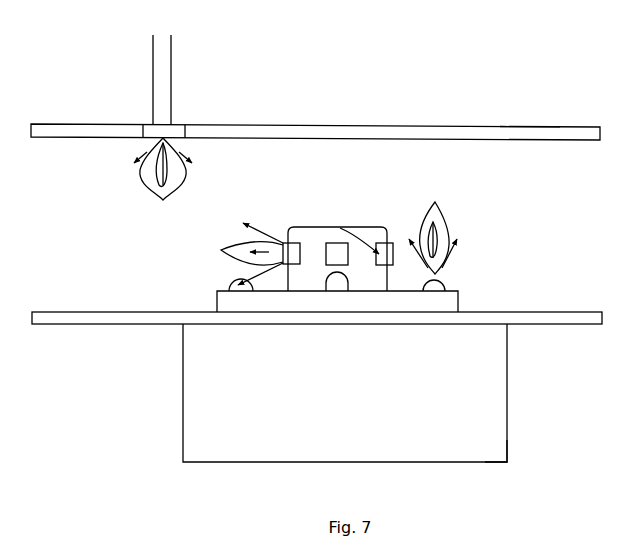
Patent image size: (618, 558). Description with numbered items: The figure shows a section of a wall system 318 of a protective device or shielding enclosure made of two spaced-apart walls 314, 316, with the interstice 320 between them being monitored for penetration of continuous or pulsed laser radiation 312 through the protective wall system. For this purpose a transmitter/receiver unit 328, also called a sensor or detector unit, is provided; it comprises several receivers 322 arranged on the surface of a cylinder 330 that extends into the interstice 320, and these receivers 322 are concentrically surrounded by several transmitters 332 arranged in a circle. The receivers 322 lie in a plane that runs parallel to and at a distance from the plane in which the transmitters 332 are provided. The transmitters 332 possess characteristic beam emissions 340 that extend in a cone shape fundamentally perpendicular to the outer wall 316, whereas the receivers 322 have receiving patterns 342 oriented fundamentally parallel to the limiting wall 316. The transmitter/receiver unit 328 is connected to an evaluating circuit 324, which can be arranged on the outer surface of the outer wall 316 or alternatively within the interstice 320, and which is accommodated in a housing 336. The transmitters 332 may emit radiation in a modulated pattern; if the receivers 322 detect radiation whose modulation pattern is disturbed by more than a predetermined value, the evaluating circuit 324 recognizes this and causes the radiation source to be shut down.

The laser radiation 312 is at (153, 46).
The wall 314 is at (73, 137).
The outer wall 316 is at (72, 324).
The wall system 318 is at (510, 118).
The interstice 320 is at (268, 181).
The receiver 322 is at (340, 227).
The evaluating circuit 324 is at (325, 422).
The transmitter/receiver unit 328 is at (362, 220).
The cylinder 330 is at (388, 270).
The transmitter 332 is at (447, 288).
The housing 336 is at (503, 451).
The beam emission 340 is at (433, 228).
The side emitted light 342 is at (233, 254).